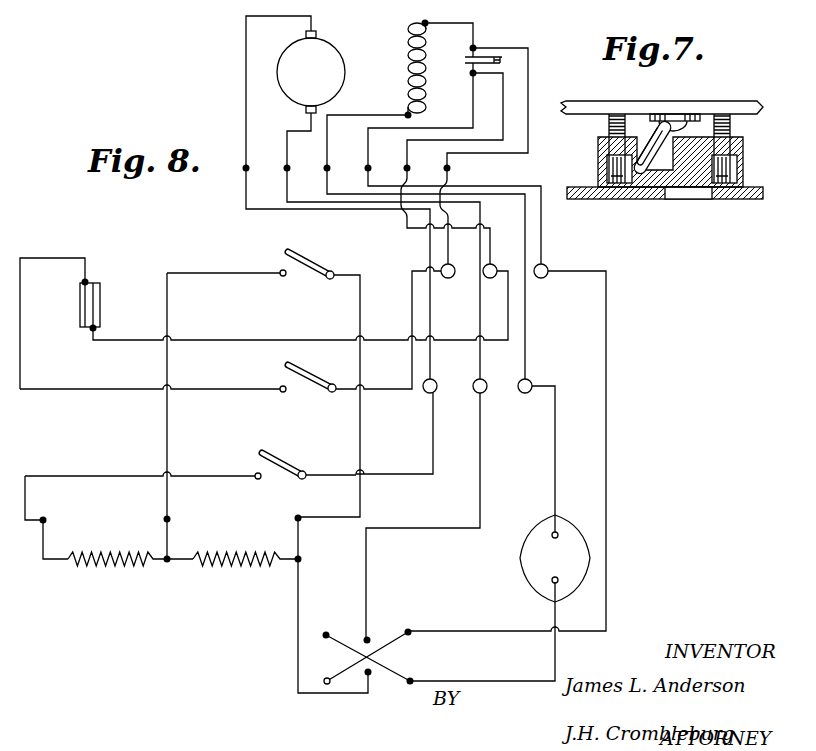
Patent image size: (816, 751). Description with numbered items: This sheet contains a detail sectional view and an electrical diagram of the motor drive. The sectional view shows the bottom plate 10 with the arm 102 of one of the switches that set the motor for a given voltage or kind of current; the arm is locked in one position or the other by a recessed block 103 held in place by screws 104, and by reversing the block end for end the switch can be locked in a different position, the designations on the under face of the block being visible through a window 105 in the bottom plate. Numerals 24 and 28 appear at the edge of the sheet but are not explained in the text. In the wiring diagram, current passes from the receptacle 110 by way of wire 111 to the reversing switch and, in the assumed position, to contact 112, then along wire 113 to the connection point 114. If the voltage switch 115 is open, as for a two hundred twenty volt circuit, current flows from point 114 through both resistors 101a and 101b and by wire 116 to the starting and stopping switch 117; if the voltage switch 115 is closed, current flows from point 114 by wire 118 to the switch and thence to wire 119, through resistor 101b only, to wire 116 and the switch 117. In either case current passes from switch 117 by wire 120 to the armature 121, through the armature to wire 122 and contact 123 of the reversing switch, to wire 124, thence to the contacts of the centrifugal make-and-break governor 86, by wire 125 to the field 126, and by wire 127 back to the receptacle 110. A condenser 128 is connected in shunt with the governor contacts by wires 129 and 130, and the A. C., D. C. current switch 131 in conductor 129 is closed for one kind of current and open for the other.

In FIG. 7, the bottom plate 10 is at (600, 200).
In FIG. 8, the element 24 is at (97, 8).
In FIG. 8, the element 28 is at (160, 0).
In FIG. 7, the element 28 is at (642, 8).
In FIG. 8, the governor 86 is at (488, 57).
In FIG. 8, the resistor 101a is at (226, 567).
In FIG. 8, the resistor 101b is at (104, 567).
In FIG. 7, the switch arm 102 is at (652, 172).
In FIG. 7, the recessed block 103 is at (697, 175).
In FIG. 7, the screw 104 is at (600, 151).
In FIG. 7, the window 105 is at (688, 200).
In FIG. 8, the receptacle 110 is at (522, 558).
In FIG. 8, the wire 111 is at (515, 681).
In FIG. 8, the contact 112 is at (377, 673).
In FIG. 8, the wire 113 is at (302, 632).
In FIG. 8, the connection point 114 is at (298, 559).
In FIG. 8, the voltage switch 115 is at (318, 258).
In FIG. 8, the wire 116 is at (86, 476).
In FIG. 8, the starting and stopping switch 117 is at (278, 479).
In FIG. 8, the wire 118 is at (361, 426).
In FIG. 8, the wire 119 is at (168, 435).
In FIG. 8, the wire 120 is at (246, 99).
In FIG. 8, the armature 121 is at (335, 50).
In FIG. 8, the wire 122 is at (287, 151).
In FIG. 8, the contact 123 is at (372, 633).
In FIG. 8, the wire 124 is at (447, 128).
In FIG. 8, the wire 125 is at (458, 18).
In FIG. 8, the field 126 is at (406, 28).
In FIG. 8, the wire 127 is at (359, 116).
In FIG. 8, the condenser 128 is at (100, 308).
In FIG. 8, the wire 129 is at (204, 388).
In FIG. 8, the wire 130 is at (198, 340).
In FIG. 8, the A. C., D. C. current switch 131 is at (306, 390).